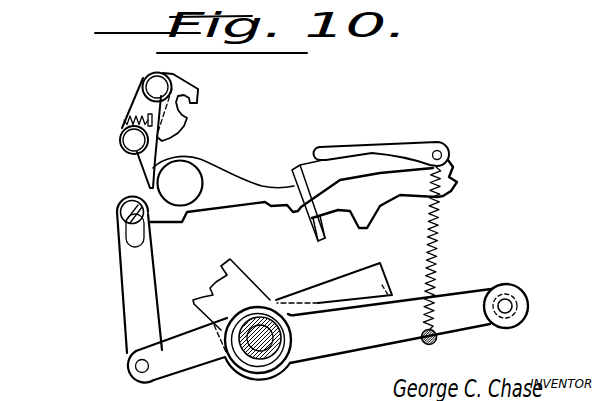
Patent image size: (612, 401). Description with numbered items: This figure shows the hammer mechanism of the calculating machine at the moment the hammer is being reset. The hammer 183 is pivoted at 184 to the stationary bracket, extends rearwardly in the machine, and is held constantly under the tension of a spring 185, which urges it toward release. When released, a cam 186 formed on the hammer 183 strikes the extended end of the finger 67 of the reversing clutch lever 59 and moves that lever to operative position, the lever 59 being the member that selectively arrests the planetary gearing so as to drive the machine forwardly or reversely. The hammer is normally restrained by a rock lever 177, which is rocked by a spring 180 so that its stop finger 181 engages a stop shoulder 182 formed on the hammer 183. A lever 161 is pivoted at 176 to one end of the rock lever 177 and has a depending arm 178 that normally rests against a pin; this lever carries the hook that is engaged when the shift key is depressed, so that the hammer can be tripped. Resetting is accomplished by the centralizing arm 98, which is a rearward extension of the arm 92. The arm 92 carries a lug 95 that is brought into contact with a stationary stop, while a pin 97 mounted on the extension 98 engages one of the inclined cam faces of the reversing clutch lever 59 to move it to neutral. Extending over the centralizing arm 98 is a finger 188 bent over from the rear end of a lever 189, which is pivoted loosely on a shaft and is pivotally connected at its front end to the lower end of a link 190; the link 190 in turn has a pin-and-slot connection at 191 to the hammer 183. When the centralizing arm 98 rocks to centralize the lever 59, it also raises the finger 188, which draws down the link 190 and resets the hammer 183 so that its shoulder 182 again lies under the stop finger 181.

The pivot 176 is at (148, 81).
The rock lever 177 is at (138, 103).
The spring 180 is at (122, 121).
The depending arm 178 is at (181, 123).
The lever 161 is at (197, 93).
The stop finger 181 is at (153, 165).
The pivot 184 is at (186, 183).
The stop shoulder 182 is at (150, 188).
The pin-and-slot connection 191 is at (124, 211).
The link 190 is at (127, 278).
The hammer 183 is at (221, 199).
The cam 186 is at (302, 194).
The lug (finger) of reversing clutch lever 67 is at (324, 237).
The reversing clutch lever 59 is at (380, 143).
The spring 185 is at (438, 222).
The arm 92 is at (223, 289).
The lever 189 is at (287, 300).
The finger 188 is at (389, 296).
The centralizing arm (rearward extension) 98 is at (358, 331).
The lug 95 is at (256, 357).
The pin 97 is at (521, 298).